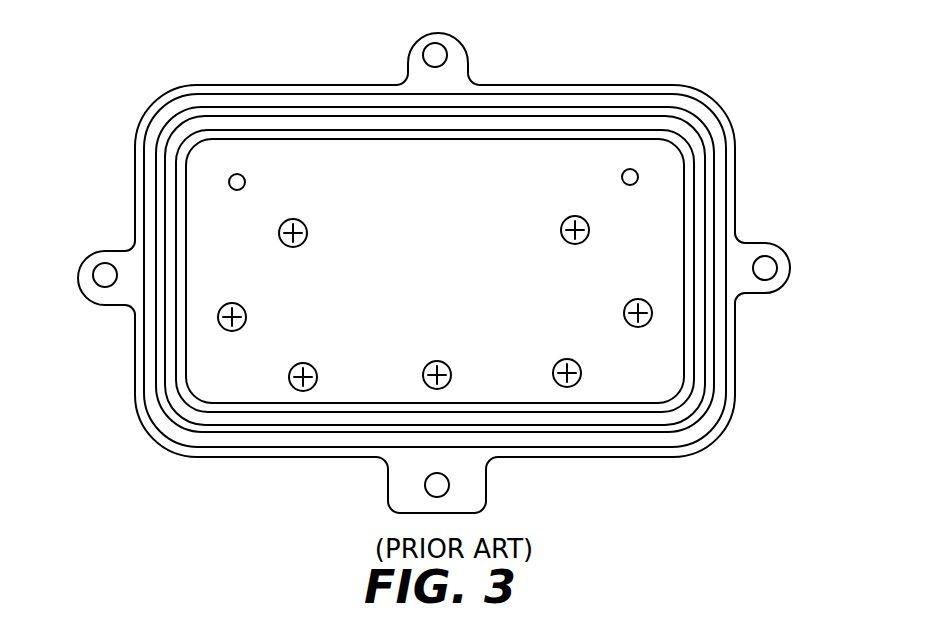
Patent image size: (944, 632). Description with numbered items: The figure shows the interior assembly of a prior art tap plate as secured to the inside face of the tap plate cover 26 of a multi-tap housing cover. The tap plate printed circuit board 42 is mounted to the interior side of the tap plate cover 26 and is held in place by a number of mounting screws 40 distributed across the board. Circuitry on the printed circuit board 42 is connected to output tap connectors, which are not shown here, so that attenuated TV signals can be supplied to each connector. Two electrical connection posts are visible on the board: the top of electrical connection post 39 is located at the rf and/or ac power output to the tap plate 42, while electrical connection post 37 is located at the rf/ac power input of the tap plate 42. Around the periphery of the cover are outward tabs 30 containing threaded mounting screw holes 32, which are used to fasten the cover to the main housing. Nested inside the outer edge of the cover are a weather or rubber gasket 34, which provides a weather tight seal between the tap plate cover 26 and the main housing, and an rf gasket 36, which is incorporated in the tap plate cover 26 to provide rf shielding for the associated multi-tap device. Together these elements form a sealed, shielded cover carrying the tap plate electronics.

The tap plate cover 26 is at (580, 80).
The mounting tab 30 is at (462, 64).
The threaded mounting screw holes 32 is at (422, 64).
The weather gasket 34 is at (662, 101).
The rf gasket 36 is at (693, 177).
The electrical connection post 37 is at (246, 182).
The electrical connection post 39 is at (622, 176).
The mounting screws 40 is at (301, 228).
The tap plate printed circuit board 42 is at (667, 220).